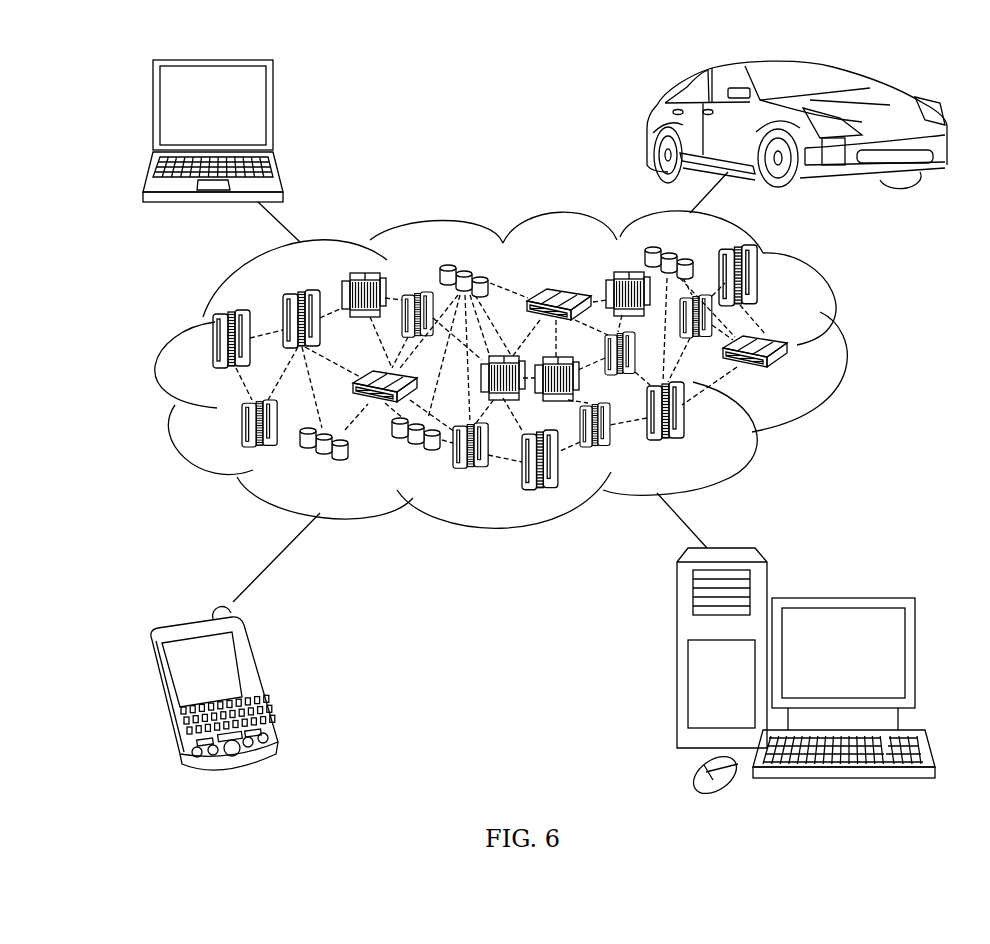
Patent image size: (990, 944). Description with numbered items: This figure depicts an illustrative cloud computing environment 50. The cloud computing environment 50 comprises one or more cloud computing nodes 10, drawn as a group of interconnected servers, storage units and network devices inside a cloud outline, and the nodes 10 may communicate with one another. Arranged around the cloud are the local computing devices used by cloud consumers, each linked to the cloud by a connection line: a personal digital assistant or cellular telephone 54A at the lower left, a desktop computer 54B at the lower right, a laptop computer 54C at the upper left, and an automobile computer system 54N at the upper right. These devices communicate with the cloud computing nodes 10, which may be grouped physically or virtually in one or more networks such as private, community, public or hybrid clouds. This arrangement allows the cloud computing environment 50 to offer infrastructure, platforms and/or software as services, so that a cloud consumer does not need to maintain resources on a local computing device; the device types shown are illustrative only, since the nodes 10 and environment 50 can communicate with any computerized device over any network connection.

The cloud computing node 10 is at (796, 376).
The cloud computing environment 50 is at (842, 353).
The personal digital assistant or cellular telephone 54A is at (263, 680).
The desktop computer 54B is at (840, 597).
The laptop computer 54C is at (273, 112).
The automobile computer system 54N is at (651, 123).